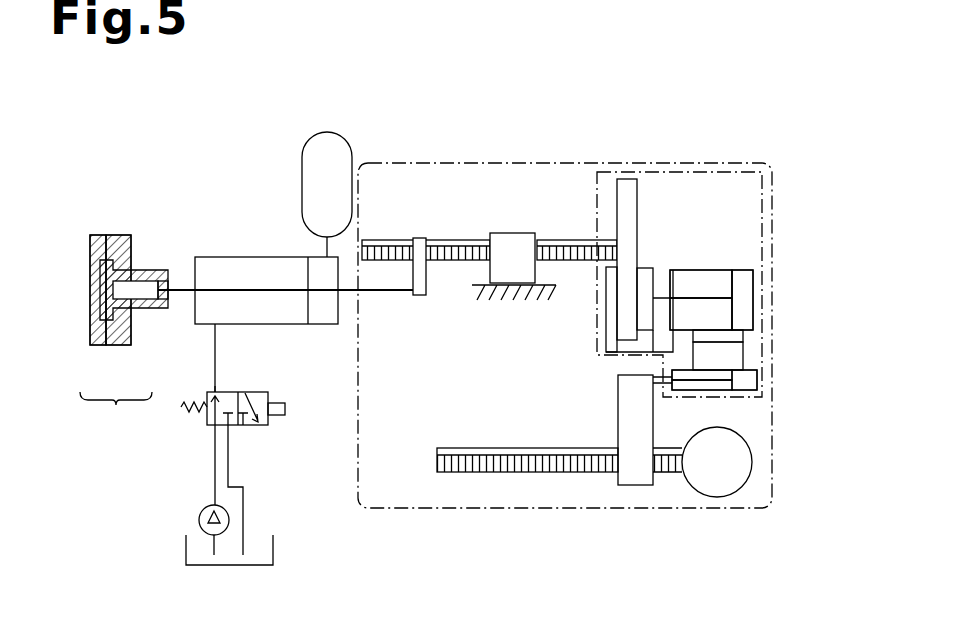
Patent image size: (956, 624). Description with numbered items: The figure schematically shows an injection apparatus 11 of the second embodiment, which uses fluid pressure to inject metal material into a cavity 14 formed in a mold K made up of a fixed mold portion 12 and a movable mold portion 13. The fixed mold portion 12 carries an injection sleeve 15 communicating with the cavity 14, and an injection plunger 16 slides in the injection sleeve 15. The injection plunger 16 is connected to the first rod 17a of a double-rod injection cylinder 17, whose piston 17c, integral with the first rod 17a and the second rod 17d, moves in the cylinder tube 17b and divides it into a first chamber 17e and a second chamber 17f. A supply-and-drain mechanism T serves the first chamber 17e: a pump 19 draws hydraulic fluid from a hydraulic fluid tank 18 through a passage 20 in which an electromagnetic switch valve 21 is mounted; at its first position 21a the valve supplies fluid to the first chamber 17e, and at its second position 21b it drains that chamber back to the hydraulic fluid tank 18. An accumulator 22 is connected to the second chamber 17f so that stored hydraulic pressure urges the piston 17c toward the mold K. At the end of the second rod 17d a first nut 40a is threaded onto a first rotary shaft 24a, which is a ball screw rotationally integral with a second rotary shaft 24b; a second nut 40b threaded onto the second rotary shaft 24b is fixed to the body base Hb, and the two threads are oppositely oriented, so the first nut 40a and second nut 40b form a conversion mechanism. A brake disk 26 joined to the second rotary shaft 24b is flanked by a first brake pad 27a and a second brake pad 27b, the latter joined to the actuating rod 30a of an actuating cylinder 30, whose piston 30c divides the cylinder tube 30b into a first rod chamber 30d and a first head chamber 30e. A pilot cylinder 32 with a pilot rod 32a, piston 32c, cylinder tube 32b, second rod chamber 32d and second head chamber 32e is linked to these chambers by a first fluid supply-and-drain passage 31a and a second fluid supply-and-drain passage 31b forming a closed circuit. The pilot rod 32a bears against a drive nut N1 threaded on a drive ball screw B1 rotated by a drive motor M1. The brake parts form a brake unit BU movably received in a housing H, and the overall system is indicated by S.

The injection apparatus 11 is at (403, 108).
The fixed mold portion 12 is at (127, 343).
The movable mold portion 13 is at (103, 346).
The cavity 14 is at (105, 260).
The injection sleeve 15 is at (148, 268).
The injection plunger 16 is at (171, 281).
The injection cylinder 17 is at (267, 257).
The first rod 17a is at (183, 294).
The cylinder tube 17b is at (232, 326).
The piston 17c is at (304, 311).
The second rod 17d is at (351, 300).
The first chamber 17e is at (212, 262).
The second chamber 17f is at (318, 315).
The hydraulic fluid tank 18 is at (273, 546).
The pump 19 is at (199, 520).
The passage 20 is at (229, 462).
The electromagnetic switch valve 21 is at (206, 427).
The first position 21a is at (207, 392).
The second position 21b is at (268, 421).
The accumulator 22 is at (340, 132).
The first rotary shaft 24a is at (378, 240).
The second rotary shaft 24b is at (555, 240).
The brake disk 26 is at (637, 193).
The first brake pad 27a is at (607, 320).
The second brake pad 27b is at (613, 339).
The actuating cylinder 30 is at (753, 270).
The actuating rod 30a is at (663, 297).
The cylinder tube 30b is at (748, 267).
The piston 30c is at (725, 278).
The first rod chamber 30d is at (697, 280).
The first head chamber 30e is at (748, 303).
The first fluid supply-and-drain passage 31a is at (745, 335).
The second fluid supply-and-drain passage 31b is at (743, 358).
The pilot cylinder 32 is at (757, 378).
The pilot rod 32a is at (668, 374).
The cylinder tube 32b is at (655, 385).
The piston 32c is at (736, 392).
The second rod chamber 32d is at (690, 392).
The second head chamber 32e is at (753, 388).
The first nut 40a is at (420, 237).
The second nut 40b is at (500, 232).
The drive ball screw B1 is at (512, 472).
The drive nut N1 is at (636, 487).
The drive motor M1 is at (715, 497).
The housing H is at (527, 163).
The body base Hb is at (477, 288).
The brake system S is at (785, 161).
The brake unit BU is at (763, 190).
The mold K is at (116, 414).
The supply-and-drain mechanism T is at (258, 463).